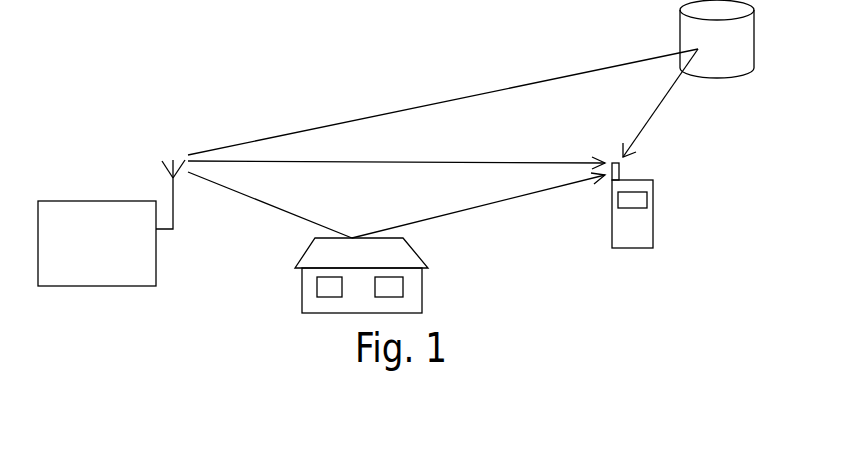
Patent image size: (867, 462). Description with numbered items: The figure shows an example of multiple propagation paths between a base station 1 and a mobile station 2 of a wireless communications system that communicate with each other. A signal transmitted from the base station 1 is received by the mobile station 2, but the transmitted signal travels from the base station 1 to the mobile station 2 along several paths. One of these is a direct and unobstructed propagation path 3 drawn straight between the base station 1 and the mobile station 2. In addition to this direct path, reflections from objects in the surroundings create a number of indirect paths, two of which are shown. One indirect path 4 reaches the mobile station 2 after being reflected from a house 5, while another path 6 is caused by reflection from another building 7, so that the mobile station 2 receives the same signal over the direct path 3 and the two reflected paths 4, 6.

The base station 1 is at (101, 201).
The mobile station 2 is at (653, 228).
The direct and unobstructed propagation path 3 is at (467, 158).
The indirect path 4 is at (475, 210).
The house 5 is at (422, 276).
The path 6 is at (525, 85).
The building 7 is at (711, 78).